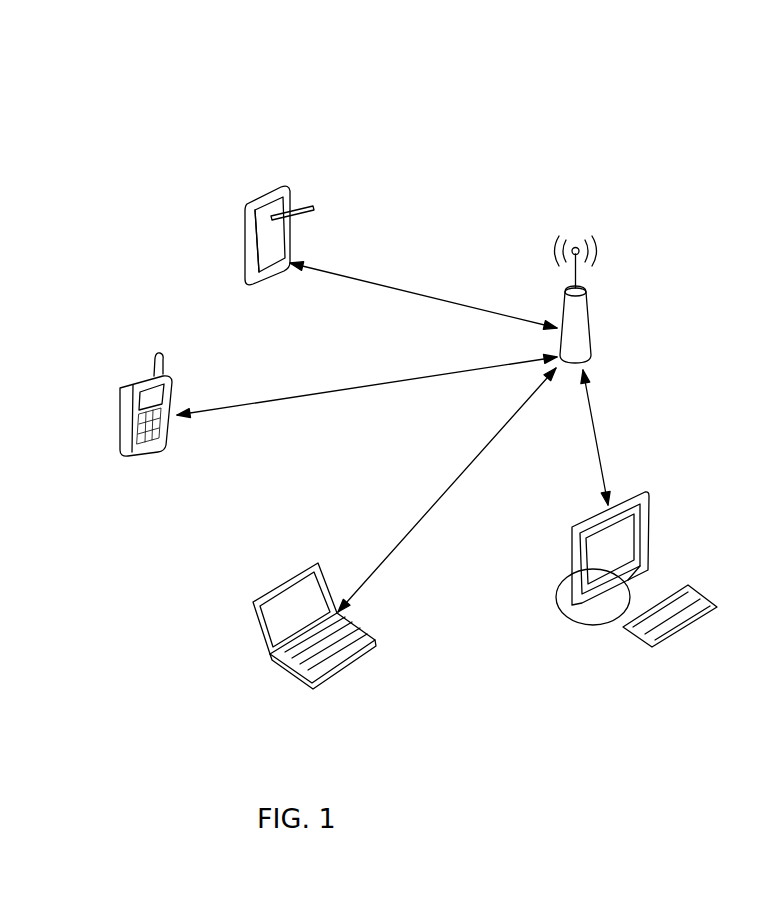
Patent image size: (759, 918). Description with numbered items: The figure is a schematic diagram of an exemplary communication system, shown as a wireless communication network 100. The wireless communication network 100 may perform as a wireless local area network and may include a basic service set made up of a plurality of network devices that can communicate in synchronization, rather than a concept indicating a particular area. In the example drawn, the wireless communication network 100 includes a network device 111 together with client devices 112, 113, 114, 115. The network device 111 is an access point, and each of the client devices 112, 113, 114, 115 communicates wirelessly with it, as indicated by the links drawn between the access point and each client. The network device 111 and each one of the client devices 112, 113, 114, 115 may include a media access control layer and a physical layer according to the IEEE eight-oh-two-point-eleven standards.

The wireless communication network 100 is at (532, 78).
The network device 111 is at (568, 303).
The client device 112 is at (644, 488).
The client device 113 is at (257, 612).
The client device 114 is at (118, 412).
The client device 115 is at (245, 281).